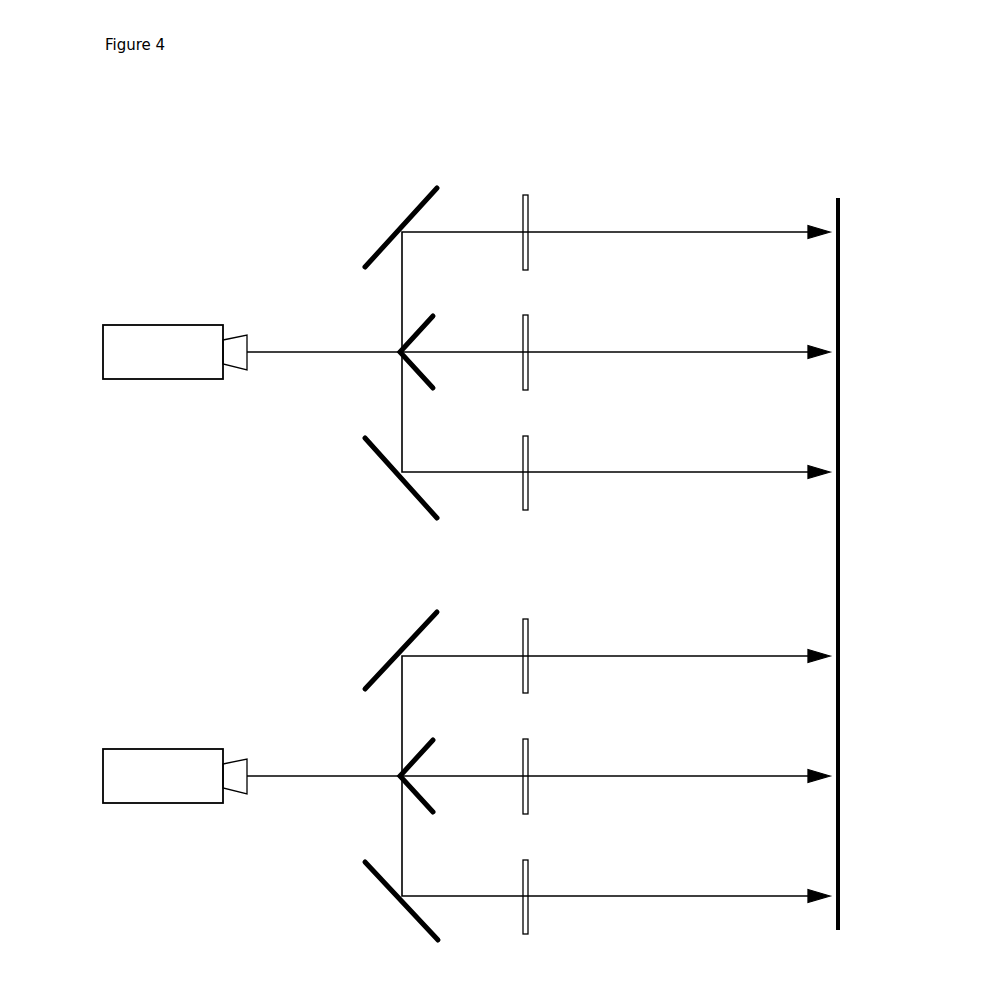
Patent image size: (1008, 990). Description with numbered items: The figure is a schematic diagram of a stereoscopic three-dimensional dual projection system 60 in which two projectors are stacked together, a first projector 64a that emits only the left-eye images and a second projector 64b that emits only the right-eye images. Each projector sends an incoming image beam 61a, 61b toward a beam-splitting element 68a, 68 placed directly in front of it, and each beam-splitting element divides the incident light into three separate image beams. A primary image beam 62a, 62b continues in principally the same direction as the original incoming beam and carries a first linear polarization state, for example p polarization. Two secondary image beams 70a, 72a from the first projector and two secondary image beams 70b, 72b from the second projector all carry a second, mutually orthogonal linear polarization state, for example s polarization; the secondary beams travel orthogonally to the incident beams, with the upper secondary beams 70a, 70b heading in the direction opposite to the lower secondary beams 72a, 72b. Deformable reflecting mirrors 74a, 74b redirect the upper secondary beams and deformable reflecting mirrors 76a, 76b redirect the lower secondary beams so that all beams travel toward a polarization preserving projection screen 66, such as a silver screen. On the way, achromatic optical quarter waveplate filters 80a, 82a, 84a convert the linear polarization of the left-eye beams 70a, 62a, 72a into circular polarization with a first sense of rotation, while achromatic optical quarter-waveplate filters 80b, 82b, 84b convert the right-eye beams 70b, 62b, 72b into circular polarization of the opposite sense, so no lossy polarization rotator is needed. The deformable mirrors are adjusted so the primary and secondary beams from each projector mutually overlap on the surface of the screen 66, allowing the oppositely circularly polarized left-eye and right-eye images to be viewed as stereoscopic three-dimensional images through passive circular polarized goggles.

The stereoscopic-3d dual projection system 60 is at (454, 101).
The polarization preserving projection screen 66 is at (851, 199).
The first projector 64a is at (83, 366).
The second projector 64b is at (89, 799).
The incoming image beam 61a is at (343, 343).
The incoming image beam 61b is at (343, 767).
The beam-splitting element 68a is at (445, 374).
The beam-splitting element 68 is at (446, 797).
The secondary image beam 70a is at (416, 279).
The secondary image beam 70b is at (422, 696).
The secondary image beam 72a is at (418, 427).
The secondary image beam 72b is at (420, 858).
The primary image beam 62a is at (486, 339).
The primary image beam 62b is at (486, 763).
The deformable reflecting mirror 74a is at (391, 199).
The deformable reflecting mirror 74b is at (382, 635).
The deformable reflecting mirror 76a is at (389, 489).
The deformable reflecting mirror 76b is at (374, 909).
The achromatic optical quarter waveplate filter 80a is at (540, 205).
The achromatic optical quarter-waveplate filter 80b is at (543, 628).
The achromatic optical quarter waveplate filter 82a is at (541, 320).
The achromatic optical quarter-waveplate filter 82b is at (542, 741).
The achromatic optical quarter waveplate filter 84a is at (545, 443).
The achromatic optical quarter-waveplate filter 84b is at (545, 865).